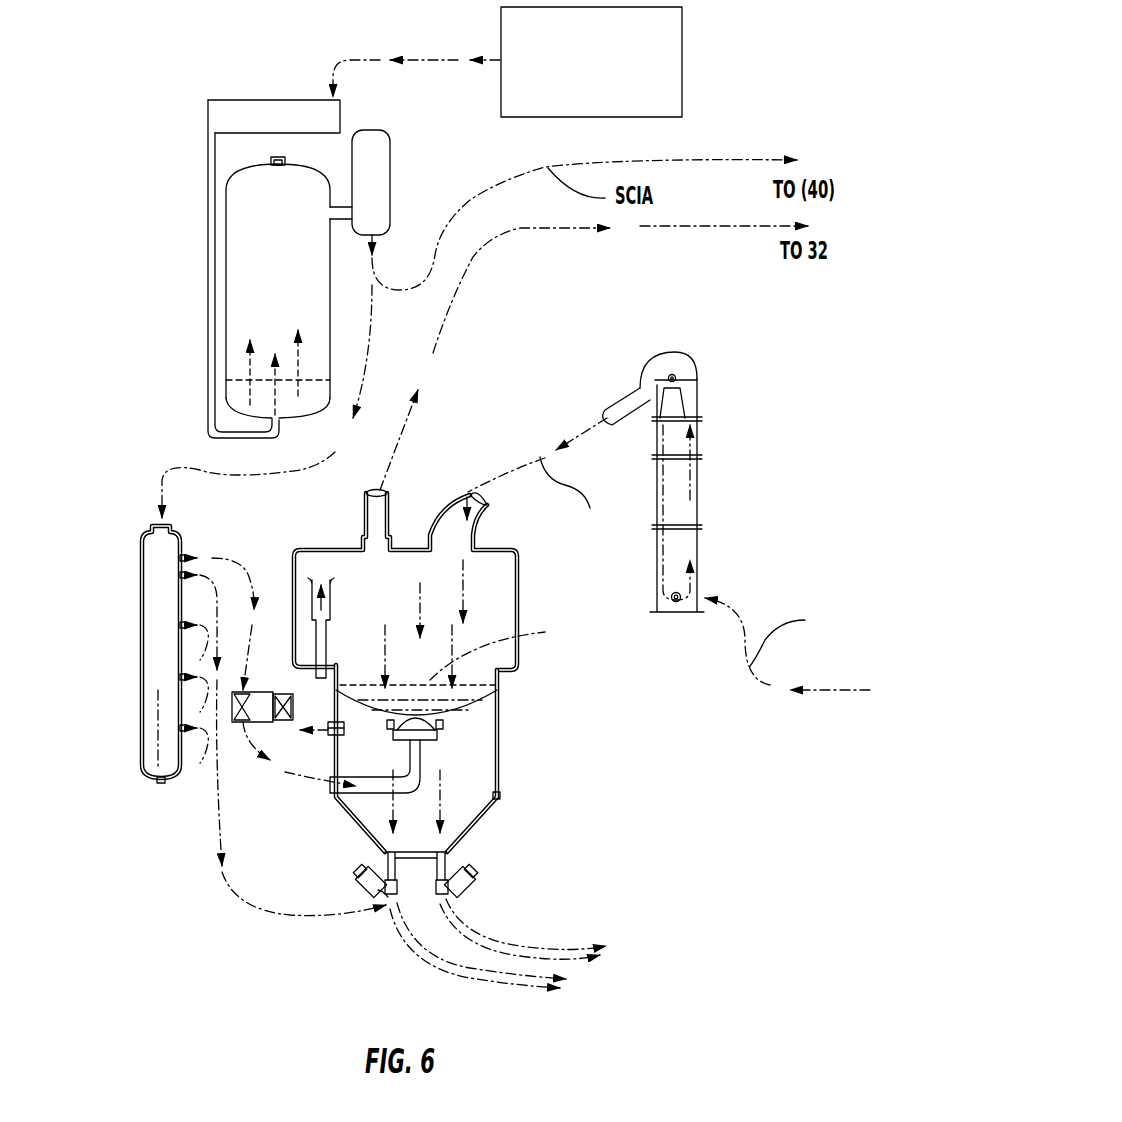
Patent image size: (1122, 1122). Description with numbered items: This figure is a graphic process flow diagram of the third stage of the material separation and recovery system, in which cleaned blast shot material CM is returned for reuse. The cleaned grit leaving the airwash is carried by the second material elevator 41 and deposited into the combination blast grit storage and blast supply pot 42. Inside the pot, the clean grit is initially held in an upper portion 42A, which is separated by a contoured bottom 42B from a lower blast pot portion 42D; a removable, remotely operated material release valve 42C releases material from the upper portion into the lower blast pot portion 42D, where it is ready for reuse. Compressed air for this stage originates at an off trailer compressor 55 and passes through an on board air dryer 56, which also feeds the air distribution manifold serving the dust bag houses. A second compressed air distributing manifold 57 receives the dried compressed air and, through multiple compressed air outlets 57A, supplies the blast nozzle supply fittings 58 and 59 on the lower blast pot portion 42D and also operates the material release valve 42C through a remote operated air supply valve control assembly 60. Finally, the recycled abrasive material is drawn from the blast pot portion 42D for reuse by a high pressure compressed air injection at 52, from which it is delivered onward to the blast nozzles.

The second material elevator 41 is at (718, 445).
The combination blast grit storage and blast supply pot 42 is at (526, 585).
The upper portion 42A is at (490, 700).
The contoured bottom 42B is at (478, 728).
The material release valve 42C is at (437, 740).
The lower blast pot portion 42D is at (475, 795).
The high pressure compressed air injection 52 is at (391, 931).
The off trailer compressor 55 is at (682, 76).
The on board air dryer 56 is at (258, 305).
The second compressed air distributing manifold 57 is at (155, 628).
The compressed air outlets 57A is at (210, 558).
The blast nozzle supply fitting 58 is at (362, 878).
The blast nozzle supply fitting 59 is at (470, 893).
The remote operated air supply valve control assembly 60 is at (258, 682).